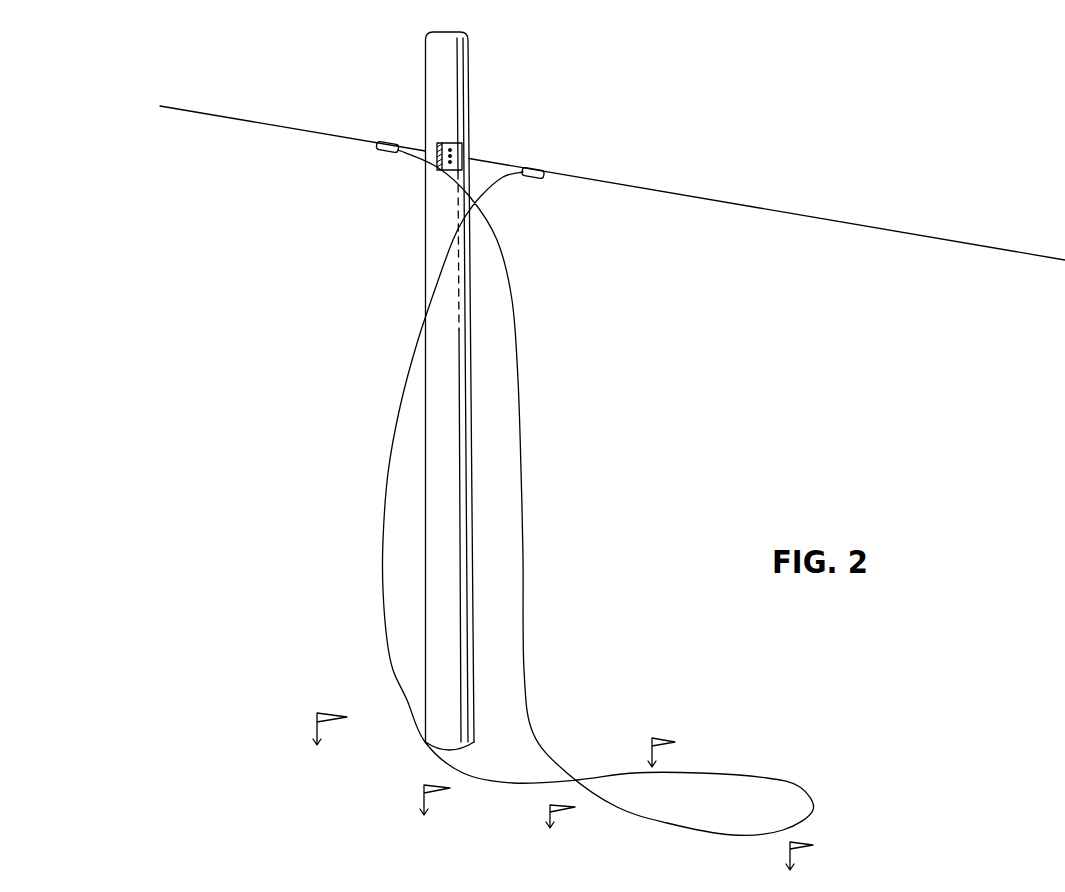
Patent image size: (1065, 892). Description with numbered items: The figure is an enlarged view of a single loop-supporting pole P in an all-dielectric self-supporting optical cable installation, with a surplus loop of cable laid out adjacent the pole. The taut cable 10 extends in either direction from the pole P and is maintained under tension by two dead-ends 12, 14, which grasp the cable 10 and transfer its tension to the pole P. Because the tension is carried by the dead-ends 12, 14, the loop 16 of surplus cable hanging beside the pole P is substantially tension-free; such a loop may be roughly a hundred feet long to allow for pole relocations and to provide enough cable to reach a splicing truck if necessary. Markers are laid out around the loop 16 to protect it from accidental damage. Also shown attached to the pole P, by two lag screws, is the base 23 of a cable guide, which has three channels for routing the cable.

The taut cable 10 is at (810, 219).
The pole P is at (468, 41).
The dead-end 12 is at (430, 152).
The dead-end 14 is at (494, 163).
The base of cable guide 23 is at (450, 143).
The loop of surplus cable 16 is at (523, 558).